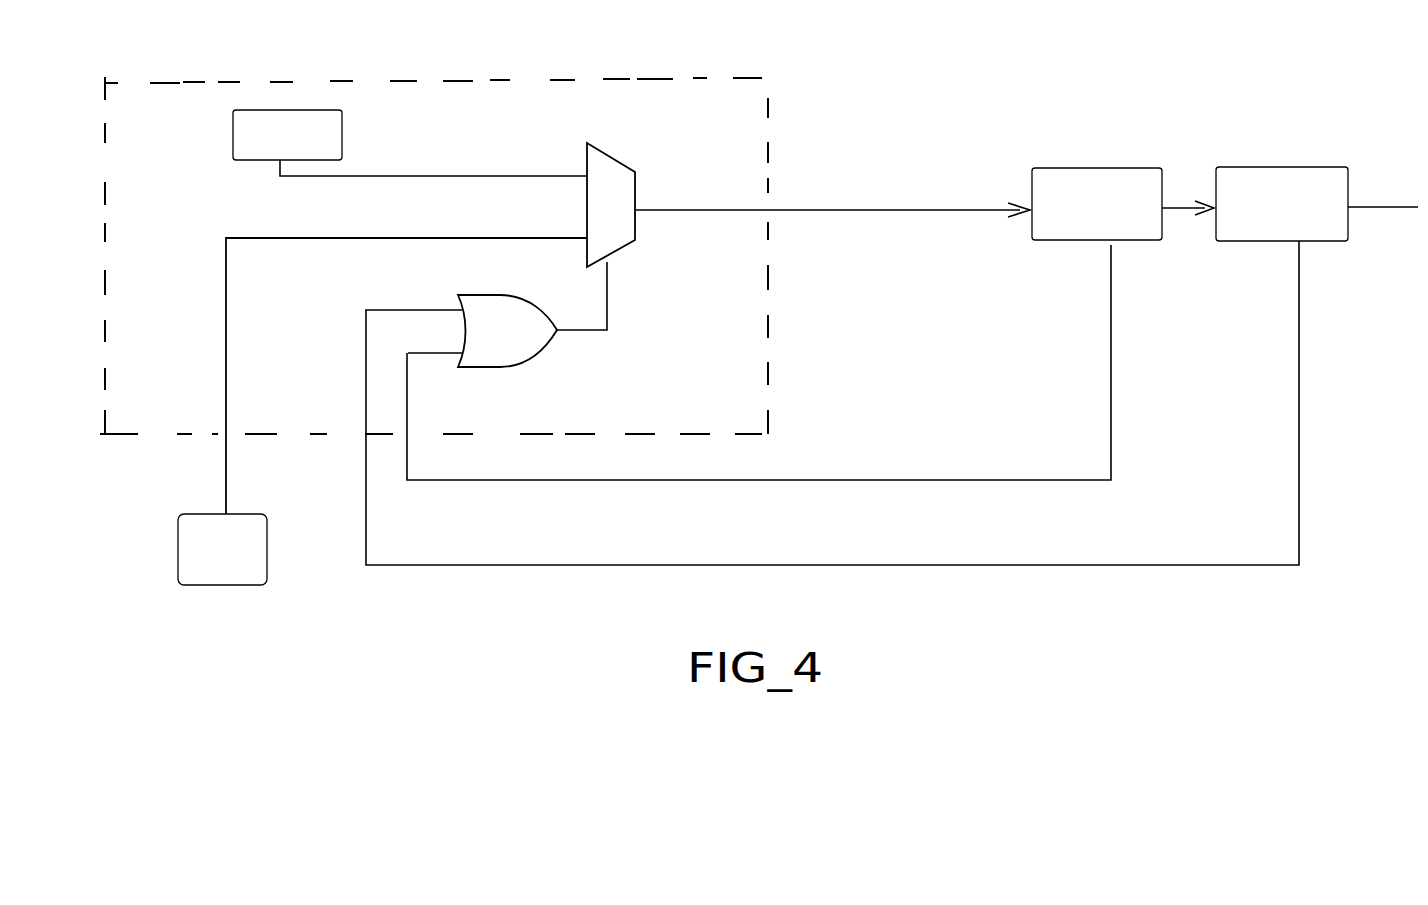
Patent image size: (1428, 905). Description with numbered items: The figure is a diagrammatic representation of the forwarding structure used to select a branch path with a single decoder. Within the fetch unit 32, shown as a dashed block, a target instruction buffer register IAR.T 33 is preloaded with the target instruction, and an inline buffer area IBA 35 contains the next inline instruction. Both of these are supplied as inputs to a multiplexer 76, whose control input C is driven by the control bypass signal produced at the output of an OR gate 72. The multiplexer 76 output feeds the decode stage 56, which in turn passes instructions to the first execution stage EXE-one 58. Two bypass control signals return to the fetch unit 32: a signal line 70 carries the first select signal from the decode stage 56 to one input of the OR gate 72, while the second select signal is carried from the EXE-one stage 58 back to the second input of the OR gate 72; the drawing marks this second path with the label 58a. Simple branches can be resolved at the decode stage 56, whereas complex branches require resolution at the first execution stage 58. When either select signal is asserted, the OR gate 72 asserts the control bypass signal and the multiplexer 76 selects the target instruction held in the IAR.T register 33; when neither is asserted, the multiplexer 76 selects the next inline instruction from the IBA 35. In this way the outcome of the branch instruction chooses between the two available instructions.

The fetch unit 32 is at (565, 82).
The target instruction buffer (IAR.T) register 33 is at (342, 143).
The multiplexer 76 is at (618, 160).
The OR gate 72 is at (532, 357).
The inline buffer area (IBA) 35 is at (267, 565).
The decode stage 56 is at (1059, 242).
The first execution stage EXE-1 58 is at (1295, 167).
The signal line 70 is at (1112, 395).
The select signal SEL_2 line 58a is at (1222, 560).